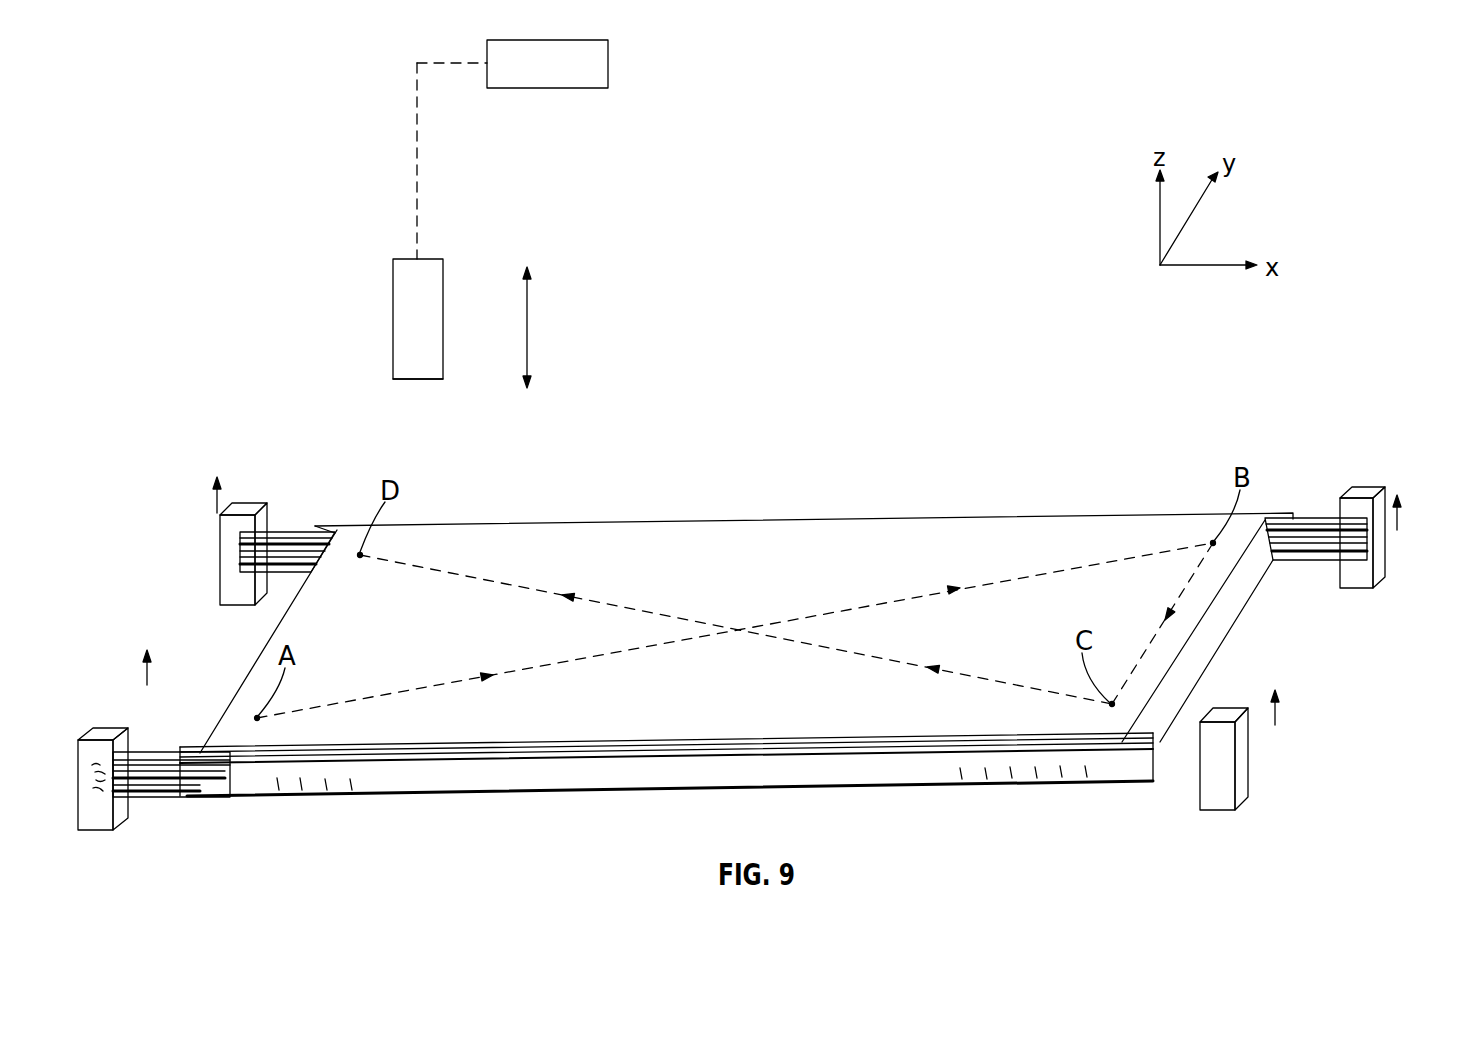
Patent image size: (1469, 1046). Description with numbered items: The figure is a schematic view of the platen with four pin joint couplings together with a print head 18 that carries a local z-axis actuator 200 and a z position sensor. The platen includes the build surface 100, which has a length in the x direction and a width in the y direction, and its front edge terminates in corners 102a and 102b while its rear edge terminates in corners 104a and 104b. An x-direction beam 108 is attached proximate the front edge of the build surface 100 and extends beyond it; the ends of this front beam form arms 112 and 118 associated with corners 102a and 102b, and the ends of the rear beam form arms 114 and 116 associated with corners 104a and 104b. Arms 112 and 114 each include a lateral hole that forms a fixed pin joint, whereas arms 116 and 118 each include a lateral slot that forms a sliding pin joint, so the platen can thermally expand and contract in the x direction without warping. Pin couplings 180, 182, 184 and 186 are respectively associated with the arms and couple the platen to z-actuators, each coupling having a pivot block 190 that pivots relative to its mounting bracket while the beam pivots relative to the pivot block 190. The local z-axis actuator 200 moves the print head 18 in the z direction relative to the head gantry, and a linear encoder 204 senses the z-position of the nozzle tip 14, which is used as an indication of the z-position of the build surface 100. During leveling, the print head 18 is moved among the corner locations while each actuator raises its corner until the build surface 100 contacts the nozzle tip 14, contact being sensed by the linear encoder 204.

The nozzle tip 14 is at (418, 380).
The print head 18 is at (443, 318).
The build surface 100 is at (730, 540).
The corner 102a is at (248, 742).
The corner 102b is at (1095, 735).
The corner 104a is at (345, 538).
The corner 104b is at (1245, 520).
The x-direction beam 108 is at (640, 760).
The arm 112 is at (155, 752).
The arm 114 is at (300, 533).
The arm 116 is at (1300, 519).
The arm 118 is at (1178, 738).
The pin coupling 180 is at (103, 838).
The pin coupling 182 is at (220, 548).
The pin coupling 184 is at (1380, 565).
The pin coupling 186 is at (1240, 740).
The pivot block 190 is at (245, 512).
The local z-axis actuator 200 is at (352, 160).
The linear encoder 204 is at (608, 64).